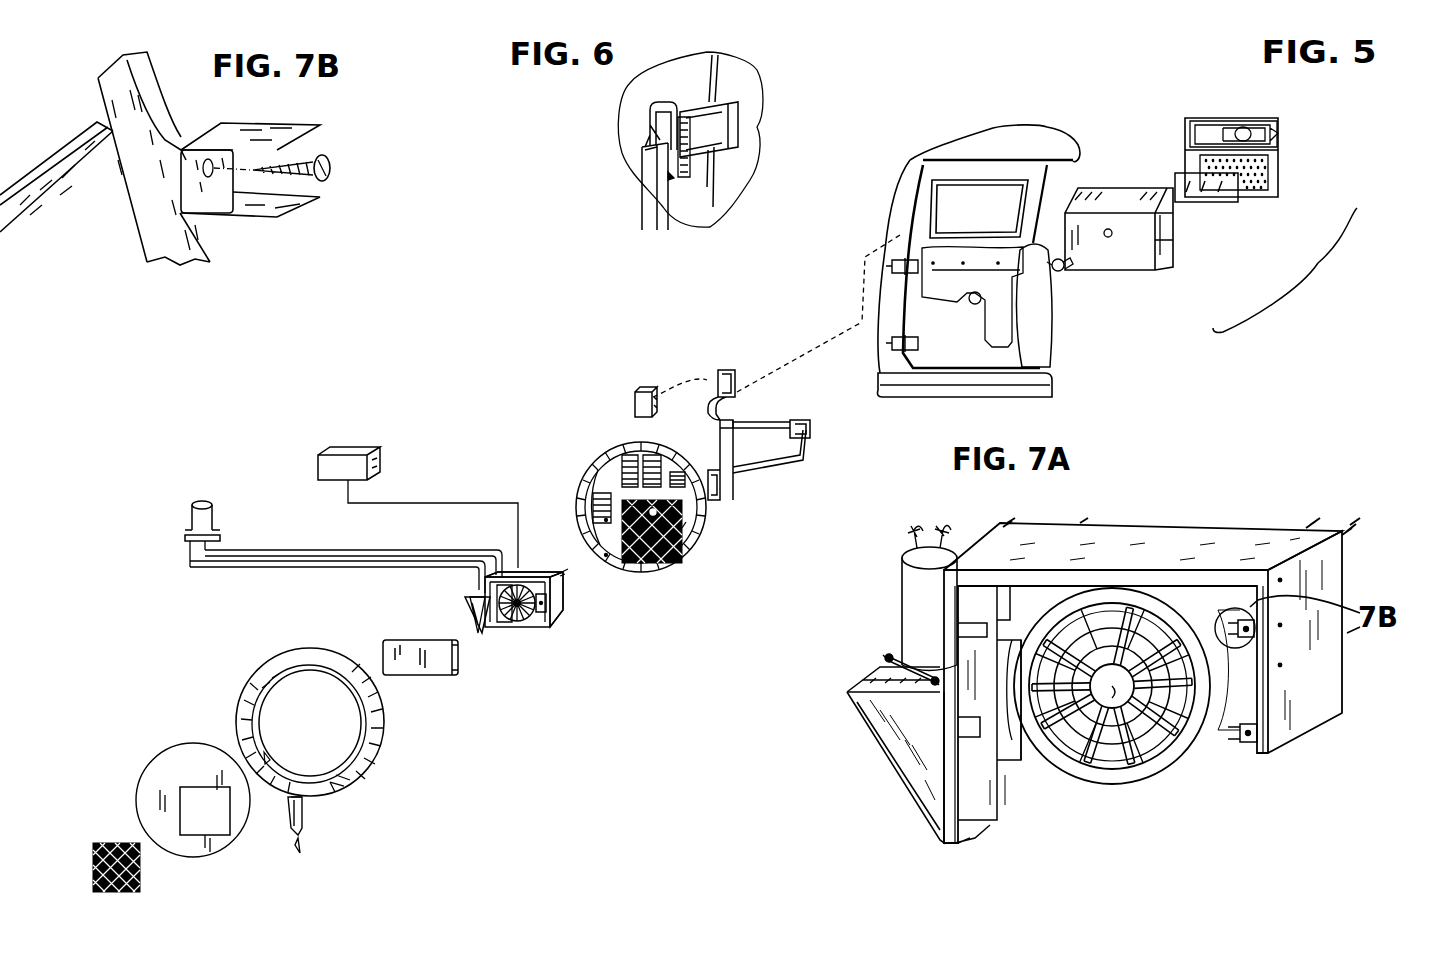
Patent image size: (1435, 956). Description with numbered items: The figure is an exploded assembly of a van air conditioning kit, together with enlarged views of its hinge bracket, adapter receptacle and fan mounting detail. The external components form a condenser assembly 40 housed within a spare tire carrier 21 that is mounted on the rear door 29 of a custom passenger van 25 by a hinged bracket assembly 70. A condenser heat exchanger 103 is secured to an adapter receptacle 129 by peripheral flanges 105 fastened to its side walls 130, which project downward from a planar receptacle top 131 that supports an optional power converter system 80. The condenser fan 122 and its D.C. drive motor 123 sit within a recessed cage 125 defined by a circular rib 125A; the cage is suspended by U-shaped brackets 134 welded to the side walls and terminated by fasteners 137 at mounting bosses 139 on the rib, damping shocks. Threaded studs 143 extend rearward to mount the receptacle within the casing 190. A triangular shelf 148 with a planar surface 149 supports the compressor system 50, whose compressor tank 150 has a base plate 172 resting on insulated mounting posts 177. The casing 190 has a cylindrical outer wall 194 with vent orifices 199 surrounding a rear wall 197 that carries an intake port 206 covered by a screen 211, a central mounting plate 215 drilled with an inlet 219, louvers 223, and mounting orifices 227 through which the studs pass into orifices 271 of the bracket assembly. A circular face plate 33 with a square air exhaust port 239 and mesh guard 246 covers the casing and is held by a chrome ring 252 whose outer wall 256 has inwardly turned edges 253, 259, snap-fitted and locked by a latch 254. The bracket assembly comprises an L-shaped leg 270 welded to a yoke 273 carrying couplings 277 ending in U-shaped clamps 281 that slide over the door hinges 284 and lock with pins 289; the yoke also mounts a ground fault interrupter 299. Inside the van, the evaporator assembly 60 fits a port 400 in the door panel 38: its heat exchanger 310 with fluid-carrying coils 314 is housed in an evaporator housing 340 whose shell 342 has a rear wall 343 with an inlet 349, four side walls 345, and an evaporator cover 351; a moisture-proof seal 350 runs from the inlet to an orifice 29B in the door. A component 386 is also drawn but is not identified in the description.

In FIG. 5, the spare tire carrier 21 is at (357, 798).
In FIG. 5, the custom passenger van 25 is at (304, 823).
In FIG. 5, the rear door 29 is at (906, 195).
In FIG. 5, the orifice 29B is at (972, 303).
In FIG. 5, the face plate 33 is at (198, 850).
In FIG. 5, the door panel 38 is at (1033, 337).
In FIG. 5, the condenser assembly 40 is at (648, 622).
In FIG. 5, the compressor system 50 is at (198, 494).
In FIG. 5, the evaporator assembly 60 is at (1285, 270).
In FIG. 5, the hinged bracket assembly 70 is at (740, 374).
In FIG. 5, the power converter system 80 is at (348, 447).
In FIG. 5, the condenser heat exchanger 103 is at (407, 637).
In FIG. 5, the peripheral flanges 105 is at (458, 664).
In FIG. 7B, the condenser fan 122 is at (50, 207).
In FIG. 5, the condenser fan 122 is at (535, 637).
In FIG. 7A, the condenser fan 122 is at (1038, 745).
In FIG. 7A, the D.C. drive motor 123 is at (1112, 686).
In FIG. 5, the recessed cage 125 is at (517, 626).
In FIG. 7A, the recessed cage 125 is at (1114, 769).
In FIG. 7B, the circular rib 125A is at (153, 240).
In FIG. 7A, the circular rib 125A is at (1130, 793).
In FIG. 5, the adapter receptacle 129 is at (495, 573).
In FIG. 7A, the adapter receptacle 129 is at (1136, 500).
In FIG. 5, the side walls 130 is at (563, 585).
In FIG. 7A, the side walls 130 is at (1313, 680).
In FIG. 5, the receptacle top 131 is at (530, 568).
In FIG. 7A, the receptacle top 131 is at (1258, 547).
In FIG. 7B, the U-shaped brackets 134 is at (300, 130).
In FIG. 5, the U-shaped brackets 134 is at (540, 605).
In FIG. 7A, the U-shaped brackets 134 is at (1247, 743).
In FIG. 7B, the fasteners 137 is at (330, 163).
In FIG. 7B, the mounting bosses 139 is at (188, 136).
In FIG. 7A, the mounting bosses 139 is at (1227, 733).
In FIG. 5, the threaded studs 143 is at (562, 590).
In FIG. 7A, the threaded studs 143 is at (1349, 530).
In FIG. 5, the shelf 148 is at (467, 612).
In FIG. 7A, the shelf 148 is at (863, 735).
In FIG. 7A, the planar surface 149 is at (880, 681).
In FIG. 5, the compressor tank 150 is at (213, 508).
In FIG. 7A, the compressor tank 150 is at (913, 602).
In FIG. 5, the base plate 172 is at (190, 540).
In FIG. 7A, the base plate 172 is at (885, 658).
In FIG. 5, the mounting posts 177 is at (470, 600).
In FIG. 5, the casing 190 is at (586, 493).
In FIG. 5, the outer wall 194 is at (676, 551).
In FIG. 5, the rear wall 197 is at (580, 547).
In FIG. 5, the vent orifices 199 is at (706, 500).
In FIG. 5, the intake port 206 is at (652, 573).
In FIG. 5, the screen 211 is at (618, 480).
In FIG. 5, the mounting plate 215 is at (640, 553).
In FIG. 5, the inlet 219 is at (684, 528).
In FIG. 5, the louvers 223 is at (645, 457).
In FIG. 5, the mounting orifices 227 is at (606, 458).
In FIG. 5, the air exhaust port 239 is at (203, 802).
In FIG. 5, the mesh guard 246 is at (93, 860).
In FIG. 5, the chrome ring 252 is at (377, 711).
In FIG. 5, the inwardly turned edge 253 is at (268, 757).
In FIG. 5, the latch 254 is at (299, 841).
In FIG. 5, the outer wall 256 is at (370, 745).
In FIG. 5, the inwardly turned edge 259 is at (245, 696).
In FIG. 5, the L-shaped leg 270 is at (775, 455).
In FIG. 5, the orifices 271 is at (785, 456).
In FIG. 6, the yoke 273 is at (650, 205).
In FIG. 5, the yoke 273 is at (757, 470).
In FIG. 6, the couplings 277 is at (667, 147).
In FIG. 6, the U-shaped clamps 281 is at (648, 137).
In FIG. 5, the U-shaped clamps 281 is at (726, 368).
In FIG. 6, the hinges 284 is at (700, 130).
In FIG. 5, the hinges 284 is at (892, 267).
In FIG. 6, the pins 289 is at (710, 218).
In FIG. 5, the ground fault interrupter 299 is at (643, 388).
In FIG. 5, the heat exchanger 310 is at (1215, 213).
In FIG. 5, the fluid-carrying coils 314 is at (1238, 186).
In FIG. 5, the evaporator housing 340 is at (1087, 186).
In FIG. 5, the shell 342 is at (1176, 273).
In FIG. 5, the rear wall 343 is at (1125, 250).
In FIG. 5, the side walls 345 is at (1160, 235).
In FIG. 5, the inlet 349 is at (1108, 238).
In FIG. 5, the seal 350 is at (1068, 272).
In FIG. 5, the evaporator cover 351 is at (1230, 122).
In FIG. 5, the display roller 386 is at (1255, 130).
In FIG. 5, the port 400 is at (1002, 307).